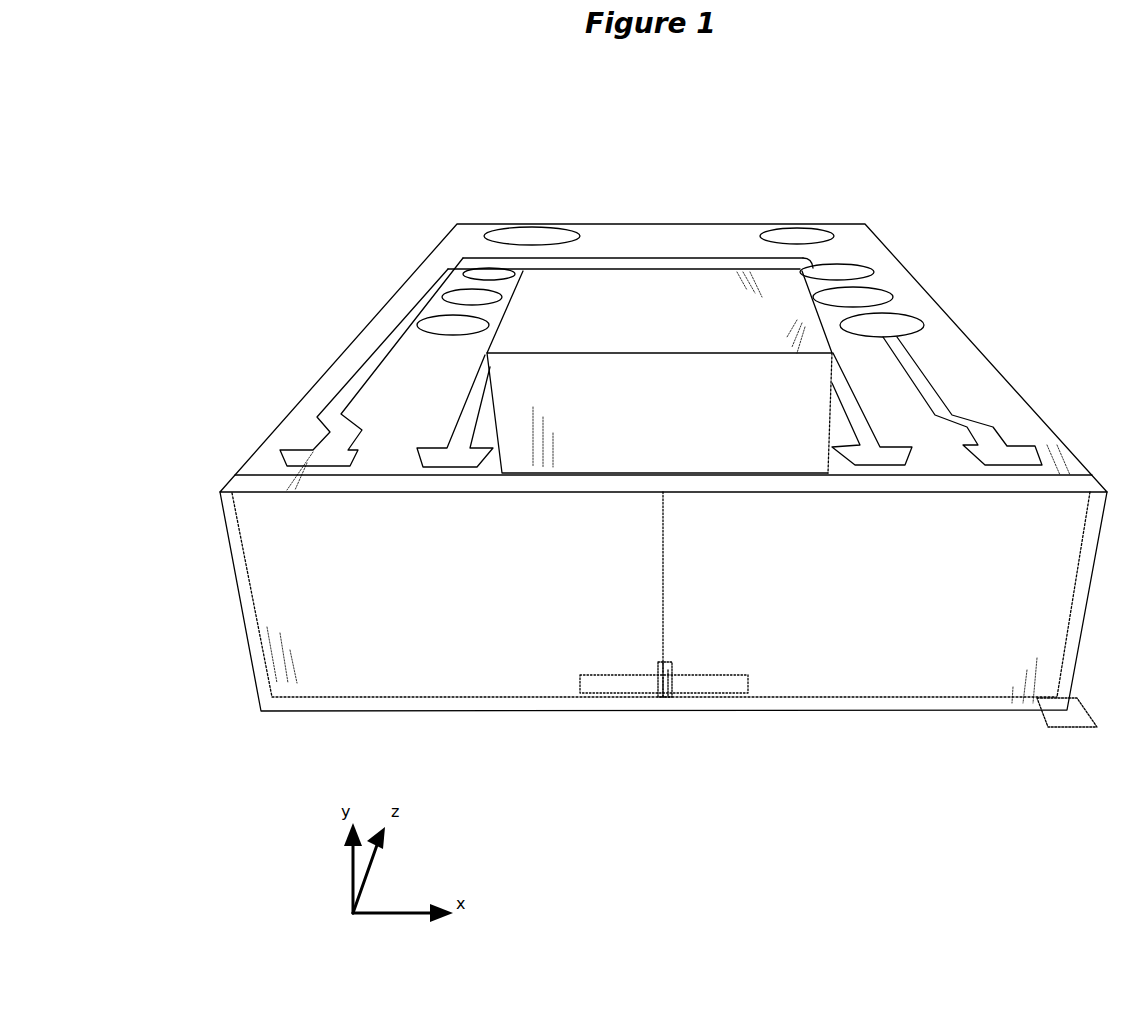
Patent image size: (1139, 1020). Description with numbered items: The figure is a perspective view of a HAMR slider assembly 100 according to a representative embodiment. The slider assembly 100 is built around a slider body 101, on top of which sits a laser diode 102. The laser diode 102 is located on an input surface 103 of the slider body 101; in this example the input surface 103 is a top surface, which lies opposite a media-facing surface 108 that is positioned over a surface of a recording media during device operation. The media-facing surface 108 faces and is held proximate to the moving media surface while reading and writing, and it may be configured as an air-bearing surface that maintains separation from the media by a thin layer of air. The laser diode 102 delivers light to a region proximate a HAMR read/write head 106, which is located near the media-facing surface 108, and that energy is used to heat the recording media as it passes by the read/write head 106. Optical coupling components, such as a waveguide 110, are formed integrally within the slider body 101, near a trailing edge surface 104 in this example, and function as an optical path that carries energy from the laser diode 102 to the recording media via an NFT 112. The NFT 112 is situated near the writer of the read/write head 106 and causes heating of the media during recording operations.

The HAMR slider assembly 100 is at (875, 163).
The slider body 101 is at (428, 258).
The laser diode 102 is at (612, 282).
The input surface 103 is at (295, 430).
The trailing edge surface 104 is at (332, 682).
The HAMR read/write head 106 is at (670, 693).
The media-facing surface 108 is at (1087, 730).
The waveguide 110 is at (663, 573).
The NFT 112 is at (665, 695).